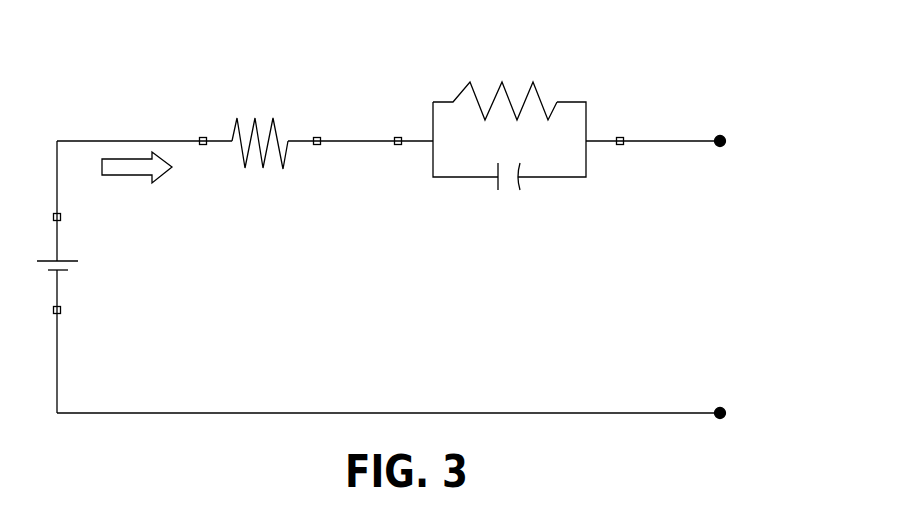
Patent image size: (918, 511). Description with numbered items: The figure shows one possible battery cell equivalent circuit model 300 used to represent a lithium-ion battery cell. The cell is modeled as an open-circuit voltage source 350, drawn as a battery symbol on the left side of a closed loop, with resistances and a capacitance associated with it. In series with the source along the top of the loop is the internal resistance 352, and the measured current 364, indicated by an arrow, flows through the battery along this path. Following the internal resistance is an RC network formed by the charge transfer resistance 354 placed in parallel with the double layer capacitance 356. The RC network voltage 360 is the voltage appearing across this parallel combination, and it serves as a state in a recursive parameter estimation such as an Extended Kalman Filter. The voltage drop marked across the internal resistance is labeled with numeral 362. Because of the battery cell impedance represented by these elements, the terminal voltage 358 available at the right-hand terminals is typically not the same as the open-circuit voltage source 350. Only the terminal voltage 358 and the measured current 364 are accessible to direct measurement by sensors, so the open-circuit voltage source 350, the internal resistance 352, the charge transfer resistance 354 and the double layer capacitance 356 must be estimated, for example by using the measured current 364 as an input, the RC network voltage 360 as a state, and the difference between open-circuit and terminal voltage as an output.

The battery cell equivalent circuit model 300 is at (693, 51).
The voltage source Voc 350 is at (70, 262).
The resistance r1 352 is at (232, 130).
The resistance r2 354 is at (542, 58).
The capacitance C 356 is at (497, 183).
The terminal voltage Vt 358 is at (730, 265).
The voltage V2 360 is at (493, 140).
The voltage V1 across resistor r1 362 is at (267, 213).
The current I 364 is at (118, 117).